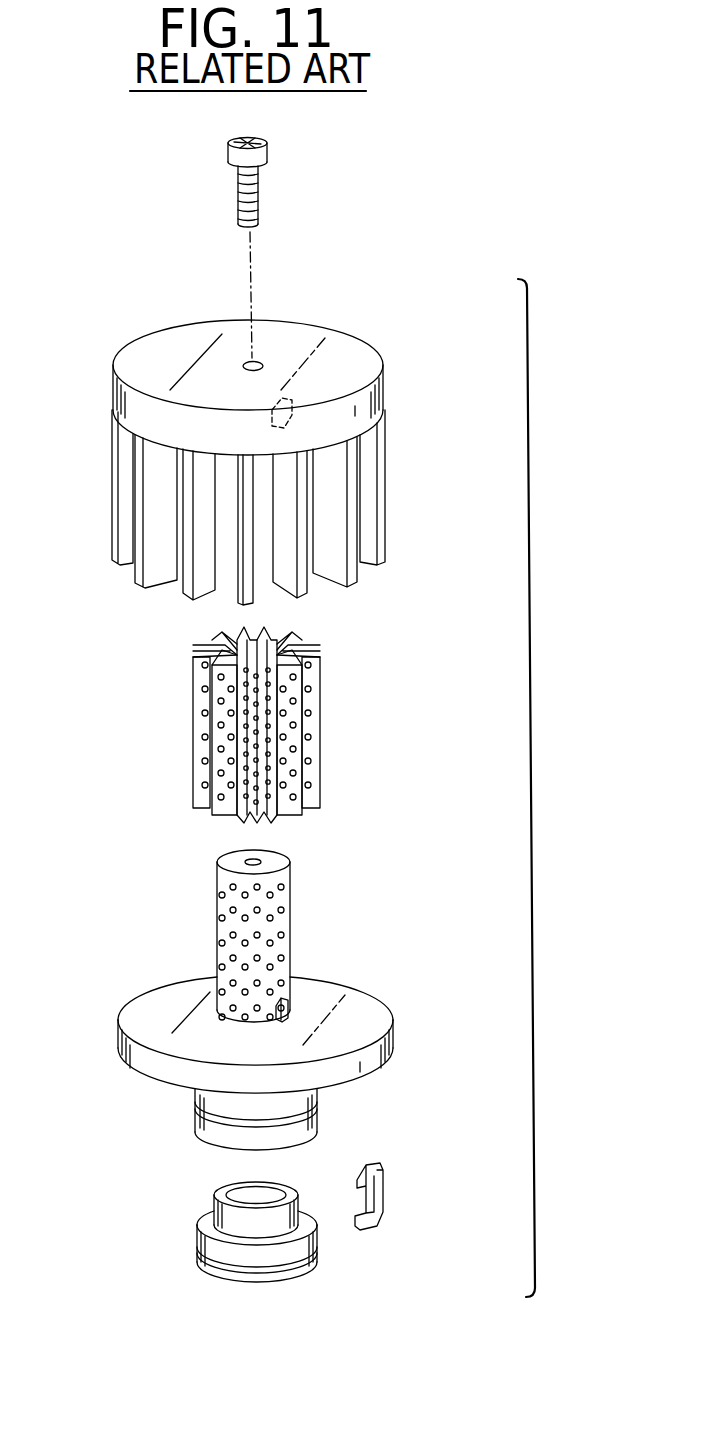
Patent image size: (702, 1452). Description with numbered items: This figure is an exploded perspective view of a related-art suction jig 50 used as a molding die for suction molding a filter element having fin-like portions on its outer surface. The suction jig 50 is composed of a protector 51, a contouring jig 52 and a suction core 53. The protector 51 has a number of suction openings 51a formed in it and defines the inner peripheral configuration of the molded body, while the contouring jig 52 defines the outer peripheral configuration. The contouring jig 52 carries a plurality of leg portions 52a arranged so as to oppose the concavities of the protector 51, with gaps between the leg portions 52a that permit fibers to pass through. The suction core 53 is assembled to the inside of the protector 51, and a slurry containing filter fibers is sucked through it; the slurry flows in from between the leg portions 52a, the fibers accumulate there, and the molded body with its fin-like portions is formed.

The suction jig 50 is at (545, 728).
The protector 51 is at (175, 694).
The suction openings 51a is at (200, 783).
The contouring jig 52 is at (168, 310).
The leg portions 52a is at (190, 582).
The suction core 53 is at (300, 879).